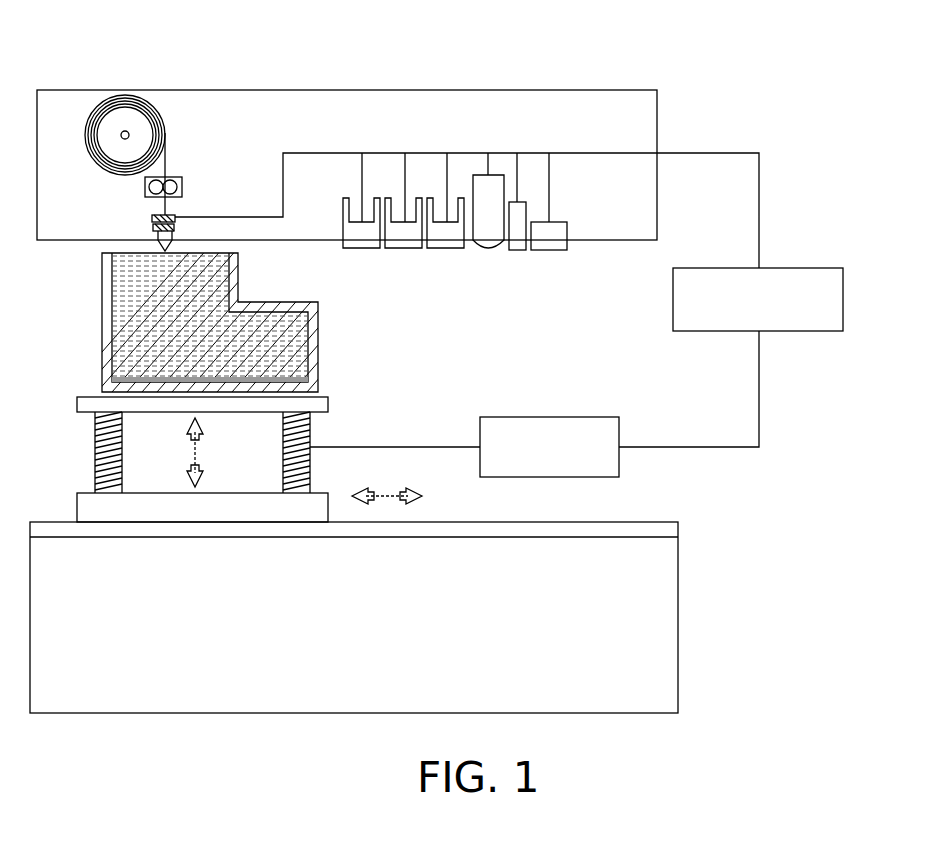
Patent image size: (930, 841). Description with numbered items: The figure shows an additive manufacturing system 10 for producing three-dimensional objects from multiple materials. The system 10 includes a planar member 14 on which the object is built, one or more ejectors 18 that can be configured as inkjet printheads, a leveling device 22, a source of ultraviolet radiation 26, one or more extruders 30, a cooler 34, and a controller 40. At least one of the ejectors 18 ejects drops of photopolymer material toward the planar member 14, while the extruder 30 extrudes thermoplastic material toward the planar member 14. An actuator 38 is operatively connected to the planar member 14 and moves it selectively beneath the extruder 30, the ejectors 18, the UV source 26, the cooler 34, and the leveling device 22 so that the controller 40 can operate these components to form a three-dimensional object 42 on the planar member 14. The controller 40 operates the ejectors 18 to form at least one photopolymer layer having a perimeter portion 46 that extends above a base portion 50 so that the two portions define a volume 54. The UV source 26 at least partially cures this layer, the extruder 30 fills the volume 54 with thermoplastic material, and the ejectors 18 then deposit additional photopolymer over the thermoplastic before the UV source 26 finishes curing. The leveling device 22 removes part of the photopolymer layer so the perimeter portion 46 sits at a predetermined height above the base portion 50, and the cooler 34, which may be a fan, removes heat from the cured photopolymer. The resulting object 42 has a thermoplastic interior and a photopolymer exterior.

The additive manufacturing system 10 is at (394, 58).
The planar member 14 is at (329, 404).
The ejectors 18 is at (362, 248).
The leveling device 22 is at (488, 250).
The source of ultraviolet (UV) radiation 26 is at (517, 250).
The extruder 30 is at (193, 168).
The cooler 34 is at (565, 222).
The actuator 38 is at (511, 416).
The controller 40 is at (722, 268).
The three-dimensional object 42 is at (240, 320).
The perimeter portion 46 is at (102, 289).
The base portion 50 is at (213, 383).
The volume 54 is at (184, 322).